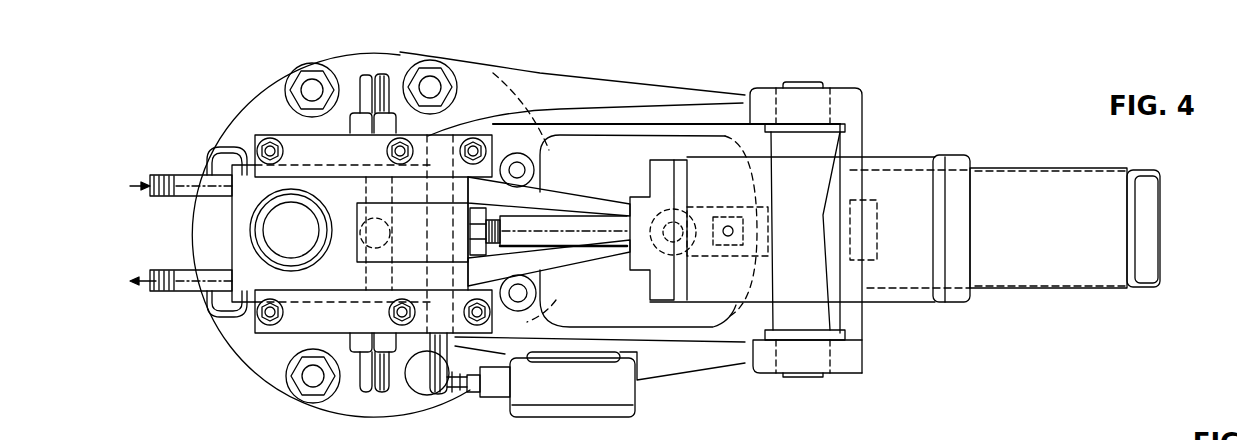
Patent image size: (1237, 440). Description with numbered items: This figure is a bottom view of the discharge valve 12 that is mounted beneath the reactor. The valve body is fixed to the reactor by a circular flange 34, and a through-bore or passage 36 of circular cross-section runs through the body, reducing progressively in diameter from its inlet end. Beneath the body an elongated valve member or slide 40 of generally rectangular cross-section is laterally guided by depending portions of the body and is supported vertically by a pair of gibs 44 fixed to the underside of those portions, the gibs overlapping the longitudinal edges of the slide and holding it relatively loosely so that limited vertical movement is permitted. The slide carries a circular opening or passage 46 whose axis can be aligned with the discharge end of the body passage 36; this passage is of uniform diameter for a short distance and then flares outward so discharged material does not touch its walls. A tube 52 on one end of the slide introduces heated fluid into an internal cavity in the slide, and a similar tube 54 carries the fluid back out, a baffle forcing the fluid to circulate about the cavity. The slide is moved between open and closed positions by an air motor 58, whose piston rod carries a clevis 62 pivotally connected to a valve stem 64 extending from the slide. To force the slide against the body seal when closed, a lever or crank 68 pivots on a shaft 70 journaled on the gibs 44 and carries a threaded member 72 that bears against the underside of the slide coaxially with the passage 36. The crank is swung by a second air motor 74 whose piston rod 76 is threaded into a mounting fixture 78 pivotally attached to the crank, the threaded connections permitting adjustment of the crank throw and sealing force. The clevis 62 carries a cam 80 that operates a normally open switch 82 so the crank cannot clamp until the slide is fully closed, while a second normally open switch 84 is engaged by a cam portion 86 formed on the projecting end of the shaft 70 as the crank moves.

The valve 12 is at (647, 371).
The circular flange 34 is at (268, 372).
The through-bore or passage 36 is at (1000, 431).
The valve member or slide 40 is at (237, 214).
The gibs 44 is at (275, 137).
The opening or passage 46 is at (258, 239).
The tube 52 is at (185, 178).
The tube 54 is at (183, 288).
The air motor 58 is at (1087, 278).
The clevis 62 is at (721, 255).
The valve stem 64 is at (597, 203).
The lever or crank 68 is at (354, 296).
The shaft 70 is at (440, 386).
The threaded member 72 is at (353, 252).
The air motor 74 is at (920, 296).
The piston rod 76 is at (567, 240).
The mounting fixture 78 is at (343, 203).
The cam 80 is at (732, 207).
The normally open switch 82 is at (861, 198).
The second normally open switch 84 is at (633, 392).
The cam portion 86 is at (437, 392).